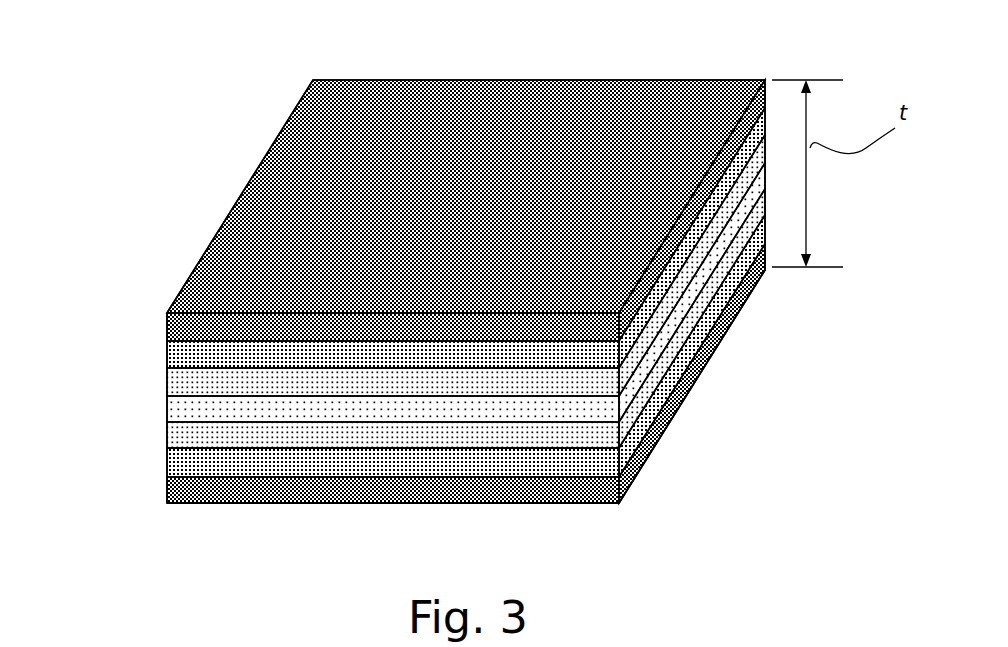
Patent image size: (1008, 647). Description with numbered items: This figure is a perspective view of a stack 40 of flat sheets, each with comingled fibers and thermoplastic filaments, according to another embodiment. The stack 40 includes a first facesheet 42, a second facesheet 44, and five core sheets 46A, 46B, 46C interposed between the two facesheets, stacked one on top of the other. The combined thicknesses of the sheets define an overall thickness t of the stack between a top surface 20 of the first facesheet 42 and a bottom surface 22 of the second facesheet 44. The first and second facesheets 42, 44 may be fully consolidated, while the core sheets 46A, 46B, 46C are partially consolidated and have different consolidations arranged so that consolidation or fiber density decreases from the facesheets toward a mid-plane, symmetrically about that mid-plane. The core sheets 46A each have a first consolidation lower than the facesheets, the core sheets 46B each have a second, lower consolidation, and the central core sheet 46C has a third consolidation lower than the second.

The stack 40 is at (286, 38).
The top surface 20 is at (292, 183).
The bottom surface 22 is at (318, 504).
The first facesheet 42 is at (150, 332).
The second facesheet 44 is at (150, 492).
The core sheets 46A is at (150, 360).
The core sheets 46B is at (150, 385).
The core sheet 46C is at (150, 410).